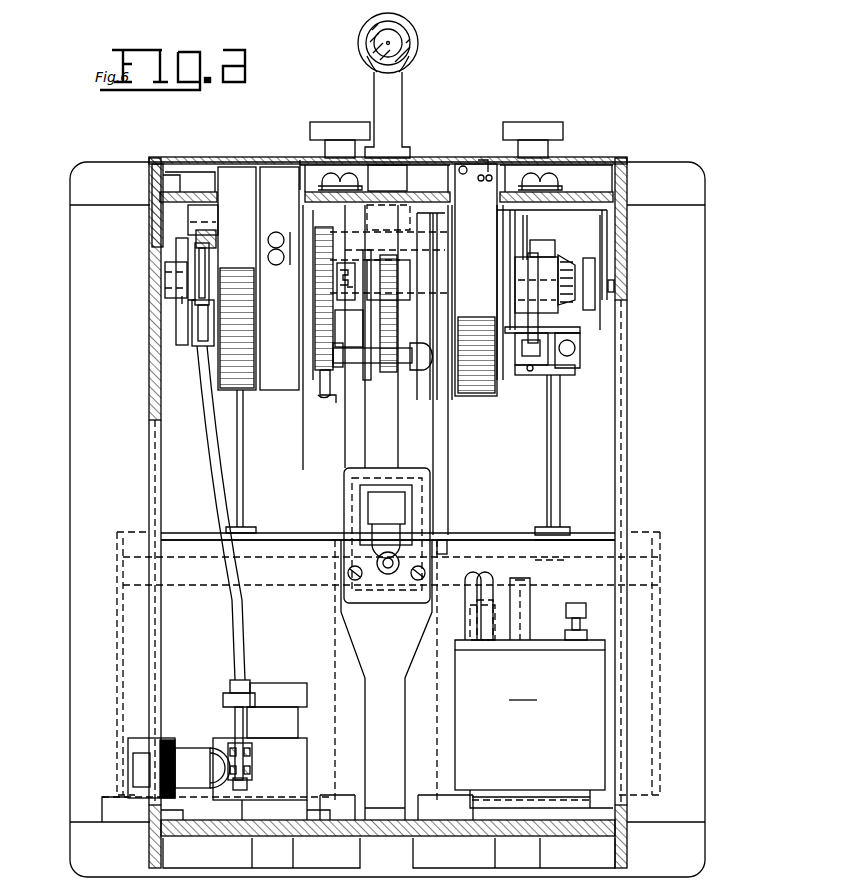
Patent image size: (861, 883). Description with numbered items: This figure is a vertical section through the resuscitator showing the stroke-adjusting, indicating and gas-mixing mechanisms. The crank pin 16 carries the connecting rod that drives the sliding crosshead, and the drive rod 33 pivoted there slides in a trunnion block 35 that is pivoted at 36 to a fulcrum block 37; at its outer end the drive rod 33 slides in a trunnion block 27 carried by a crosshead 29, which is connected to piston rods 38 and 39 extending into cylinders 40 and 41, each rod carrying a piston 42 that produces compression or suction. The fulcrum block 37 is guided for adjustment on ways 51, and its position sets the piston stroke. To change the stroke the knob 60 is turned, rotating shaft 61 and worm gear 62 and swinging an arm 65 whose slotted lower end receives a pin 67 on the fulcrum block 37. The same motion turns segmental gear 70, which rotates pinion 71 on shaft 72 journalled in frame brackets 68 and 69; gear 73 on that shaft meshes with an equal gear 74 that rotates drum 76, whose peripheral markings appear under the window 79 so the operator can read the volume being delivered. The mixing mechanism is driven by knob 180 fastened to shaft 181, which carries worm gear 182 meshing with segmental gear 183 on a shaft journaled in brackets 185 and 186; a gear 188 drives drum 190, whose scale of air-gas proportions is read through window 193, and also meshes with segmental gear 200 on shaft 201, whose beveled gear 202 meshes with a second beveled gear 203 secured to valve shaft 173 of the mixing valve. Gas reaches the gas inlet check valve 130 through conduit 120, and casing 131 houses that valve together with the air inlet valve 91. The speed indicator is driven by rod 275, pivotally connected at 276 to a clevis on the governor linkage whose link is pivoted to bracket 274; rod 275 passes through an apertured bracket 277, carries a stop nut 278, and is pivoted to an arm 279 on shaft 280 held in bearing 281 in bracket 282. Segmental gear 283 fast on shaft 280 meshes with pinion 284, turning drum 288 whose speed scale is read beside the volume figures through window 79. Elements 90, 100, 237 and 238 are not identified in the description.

The crank pin 16 is at (512, 449).
The trunnion block 27 is at (412, 246).
The crosshead 29 is at (356, 208).
The drive rod 33 is at (370, 440).
The trunnion block 35 is at (366, 494).
The pivot 36 is at (368, 522).
The fulcrum block 37 is at (346, 488).
The piston rod 38 is at (561, 470).
The piston rod 39 is at (240, 440).
The cylinder 40 is at (588, 556).
The cylinder 41 is at (193, 562).
The piston 42 is at (120, 557).
The ways 51 is at (346, 573).
The knob 60 is at (322, 125).
The shaft 61 is at (336, 216).
The worm gear 62 is at (336, 315).
The arm 65 is at (432, 468).
The pin 67 is at (445, 548).
The frame bracket 68 is at (318, 395).
The frame bracket 69 is at (420, 380).
The segmental gear 70 is at (385, 258).
The pinion 71 is at (398, 370).
The shaft 72 is at (360, 364).
The gear 73 is at (330, 403).
The gear 74 is at (336, 268).
The drum 76 is at (272, 173).
The window 79 is at (302, 160).
The cylinder 90 is at (484, 576).
The air inlet valve 91 is at (470, 611).
The marking 100 is at (480, 185).
The conduit 120 is at (533, 582).
The gas inlet check valve 130 is at (586, 618).
The casing 131 is at (534, 724).
The valve shaft 173 is at (534, 560).
The knob 180 is at (563, 126).
The shaft 181 is at (540, 221).
The worm gear 182 is at (536, 258).
The segmental gear 183 is at (540, 250).
The bracket 185 is at (510, 214).
The bracket 186 is at (603, 242).
The gear 188 is at (587, 256).
The drum 190 is at (461, 170).
The window 193 is at (480, 160).
The segmental gear 200 is at (593, 275).
The shaft 201 is at (608, 286).
The beveled gear 202 is at (561, 300).
The second beveled gear 203 is at (575, 332).
The block 237 is at (282, 684).
The cylinder 238 is at (192, 750).
The bracket 274 is at (249, 786).
The rod 275 is at (201, 348).
The pivot 276 is at (252, 768).
The apertured bracket 277 is at (226, 702).
The stop nut 278 is at (232, 680).
The arm 279 is at (190, 310).
The shaft 280 is at (165, 280).
The bearing 281 is at (185, 300).
The bracket 282 is at (190, 220).
The segmental gear 283 is at (195, 344).
The pinion 284 is at (181, 245).
The drum 288 is at (236, 168).